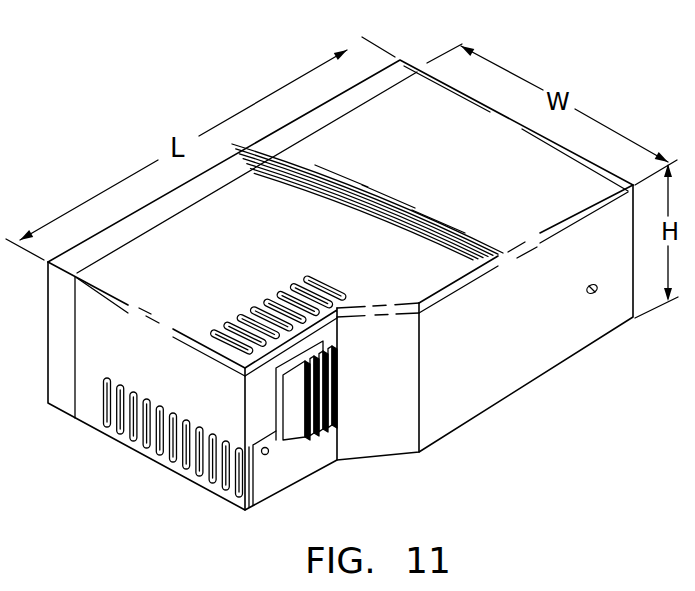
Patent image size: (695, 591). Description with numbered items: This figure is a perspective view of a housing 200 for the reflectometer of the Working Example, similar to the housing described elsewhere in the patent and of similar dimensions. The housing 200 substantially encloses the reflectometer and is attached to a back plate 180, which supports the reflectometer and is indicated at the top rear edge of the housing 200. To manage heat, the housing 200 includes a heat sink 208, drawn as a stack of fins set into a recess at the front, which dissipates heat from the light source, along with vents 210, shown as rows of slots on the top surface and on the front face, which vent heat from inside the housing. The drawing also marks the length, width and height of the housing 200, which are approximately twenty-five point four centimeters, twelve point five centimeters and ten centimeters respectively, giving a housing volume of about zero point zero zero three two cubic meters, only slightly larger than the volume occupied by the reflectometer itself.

The housing 200 is at (158, 92).
The back plate 180 is at (400, 74).
The vents 210 is at (285, 292).
The heat sink 208 is at (318, 425).